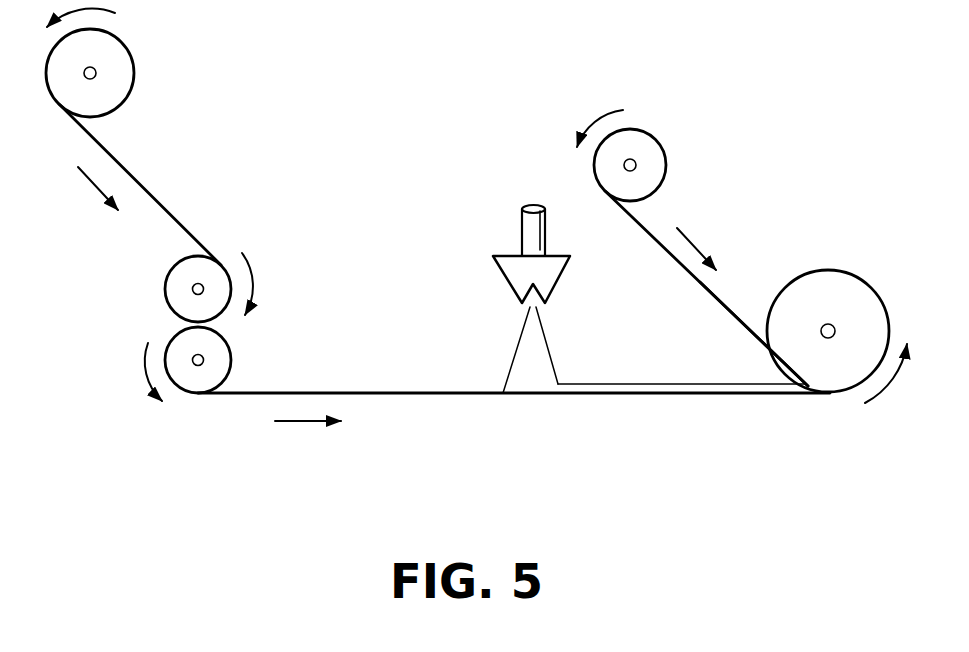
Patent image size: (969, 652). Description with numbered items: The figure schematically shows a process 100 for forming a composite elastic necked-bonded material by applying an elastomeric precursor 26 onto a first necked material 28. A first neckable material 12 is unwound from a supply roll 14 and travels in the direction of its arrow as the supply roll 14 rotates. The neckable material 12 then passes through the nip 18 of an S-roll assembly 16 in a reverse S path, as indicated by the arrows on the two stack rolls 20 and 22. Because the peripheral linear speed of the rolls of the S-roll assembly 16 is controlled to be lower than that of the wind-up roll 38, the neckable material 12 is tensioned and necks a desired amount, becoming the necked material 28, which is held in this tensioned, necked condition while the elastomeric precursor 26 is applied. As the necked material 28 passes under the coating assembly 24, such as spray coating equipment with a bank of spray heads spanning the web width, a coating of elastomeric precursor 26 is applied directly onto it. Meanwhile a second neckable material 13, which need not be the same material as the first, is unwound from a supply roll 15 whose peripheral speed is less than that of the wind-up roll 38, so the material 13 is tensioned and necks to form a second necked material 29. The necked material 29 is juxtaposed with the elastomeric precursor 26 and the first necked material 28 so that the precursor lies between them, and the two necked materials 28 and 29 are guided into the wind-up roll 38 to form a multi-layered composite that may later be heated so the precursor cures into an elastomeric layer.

The process for forming a composite elastic material 100 is at (423, 108).
The supply roll 14 is at (133, 60).
The first neckable material 12 is at (149, 192).
The stack roll 20 is at (168, 274).
The stack roll 22 is at (232, 357).
The S-roll assembly 16 is at (150, 327).
The nip 18 is at (260, 312).
The first necked material 28 is at (440, 397).
The coating assembly 24 is at (563, 275).
The elastomeric precursor 26 is at (682, 383).
The supply roll 15 is at (660, 142).
The second neckable material 13 is at (603, 195).
The second necked material 29 is at (733, 318).
The wind-up roll 38 is at (850, 272).